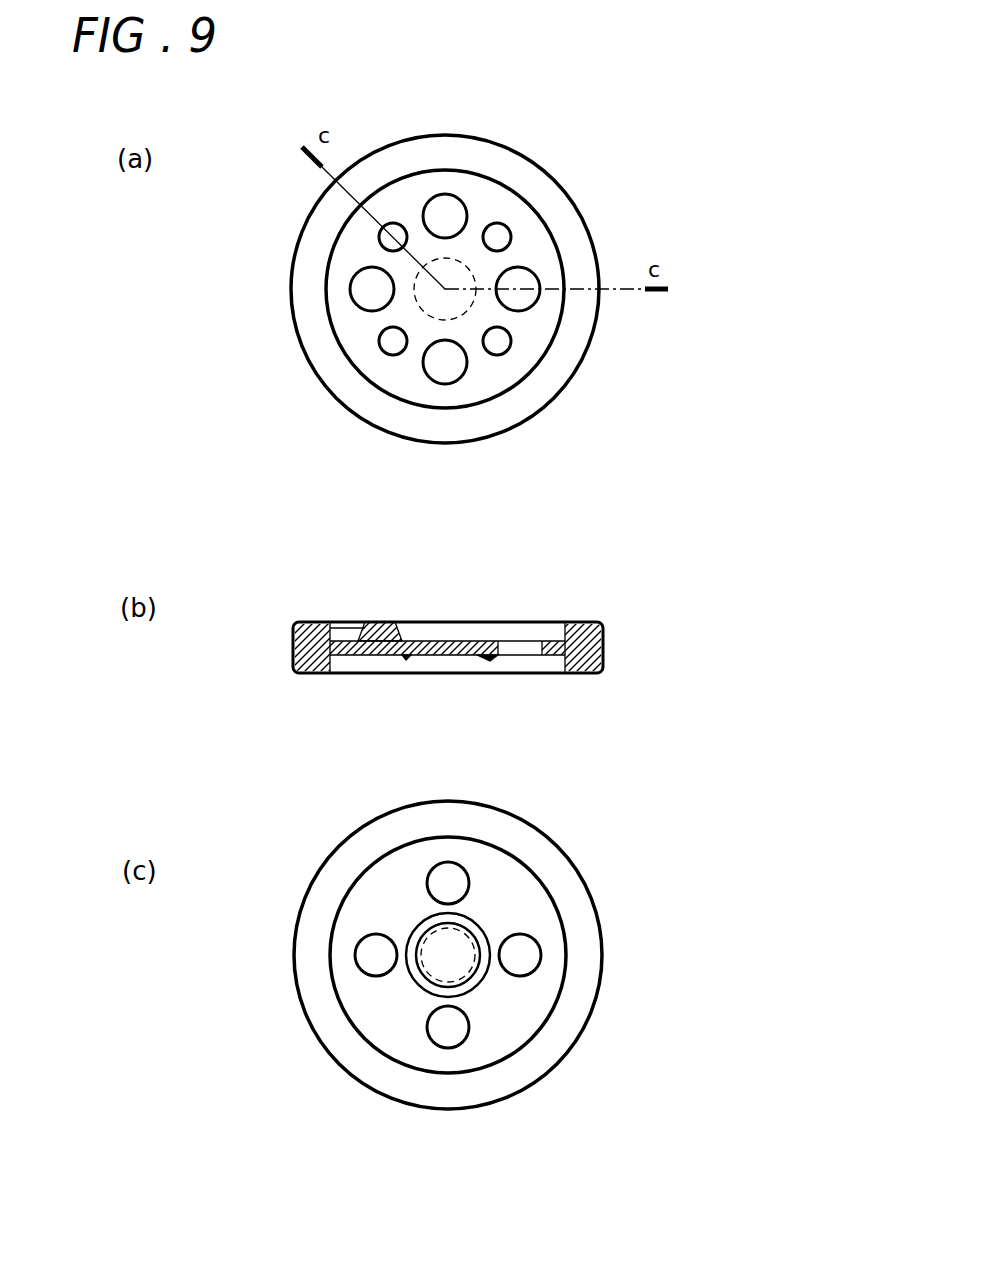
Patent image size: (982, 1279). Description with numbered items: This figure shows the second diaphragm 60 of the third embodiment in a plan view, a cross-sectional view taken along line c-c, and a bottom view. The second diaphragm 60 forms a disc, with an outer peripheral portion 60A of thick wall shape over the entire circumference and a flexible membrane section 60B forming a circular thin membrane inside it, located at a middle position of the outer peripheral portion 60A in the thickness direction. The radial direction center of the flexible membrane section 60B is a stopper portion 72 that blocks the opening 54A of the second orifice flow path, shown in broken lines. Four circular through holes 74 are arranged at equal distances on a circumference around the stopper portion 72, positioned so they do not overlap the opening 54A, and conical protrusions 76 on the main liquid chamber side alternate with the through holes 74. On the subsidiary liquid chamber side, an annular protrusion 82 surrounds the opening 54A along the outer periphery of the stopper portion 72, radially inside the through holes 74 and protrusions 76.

The second diaphragm 60 is at (467, 103).
The outer peripheral portion 60A is at (540, 387).
The flexible membrane section 60B is at (487, 378).
The stopper portion 72 is at (432, 293).
The through hole 74 is at (453, 216).
The protrusion 76 is at (390, 343).
The annular protrusion 82 is at (413, 943).
The opening 54A is at (473, 277).